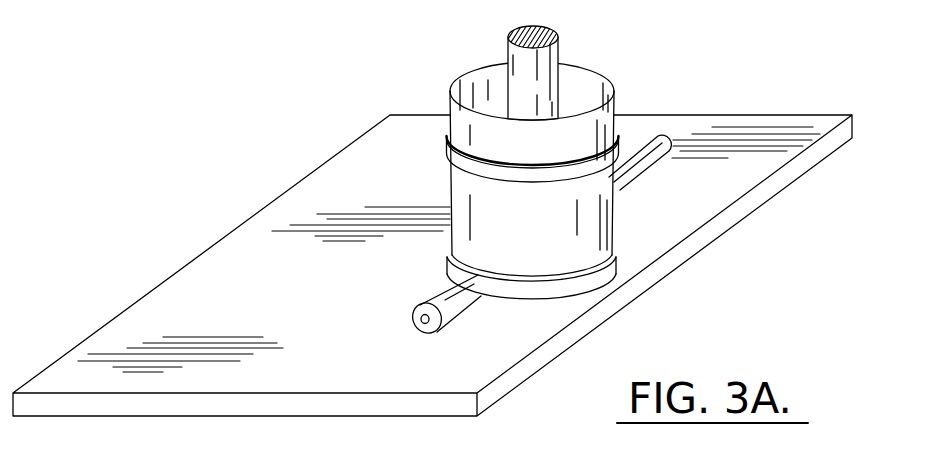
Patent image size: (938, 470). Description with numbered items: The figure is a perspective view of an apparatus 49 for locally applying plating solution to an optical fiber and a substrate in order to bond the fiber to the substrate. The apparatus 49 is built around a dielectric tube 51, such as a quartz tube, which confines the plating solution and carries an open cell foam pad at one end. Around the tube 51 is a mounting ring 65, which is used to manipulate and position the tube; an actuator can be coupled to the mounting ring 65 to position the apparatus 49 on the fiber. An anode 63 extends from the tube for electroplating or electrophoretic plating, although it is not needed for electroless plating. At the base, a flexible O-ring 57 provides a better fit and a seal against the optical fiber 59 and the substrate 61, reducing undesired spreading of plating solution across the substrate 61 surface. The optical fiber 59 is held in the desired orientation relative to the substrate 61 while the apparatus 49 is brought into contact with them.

The apparatus 49 is at (458, 63).
The dielectric tube 51 is at (615, 223).
The flexible O-ring 57 is at (587, 283).
The optical fiber 59 is at (648, 175).
The substrate 61 is at (540, 327).
The anode 63 is at (558, 50).
The mounting ring 65 is at (447, 160).